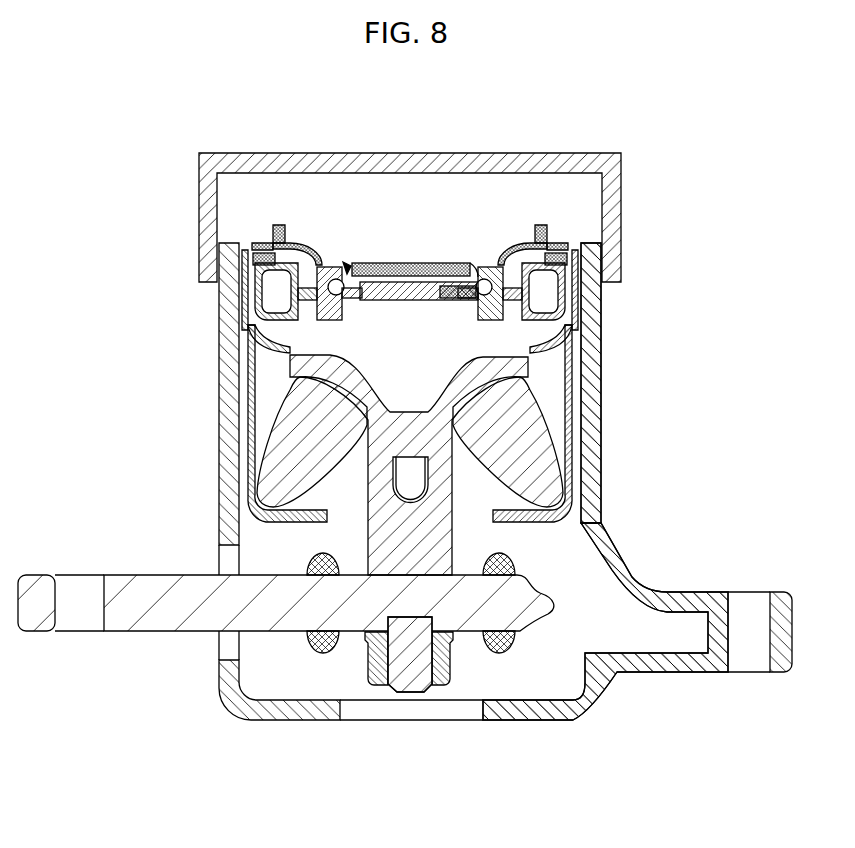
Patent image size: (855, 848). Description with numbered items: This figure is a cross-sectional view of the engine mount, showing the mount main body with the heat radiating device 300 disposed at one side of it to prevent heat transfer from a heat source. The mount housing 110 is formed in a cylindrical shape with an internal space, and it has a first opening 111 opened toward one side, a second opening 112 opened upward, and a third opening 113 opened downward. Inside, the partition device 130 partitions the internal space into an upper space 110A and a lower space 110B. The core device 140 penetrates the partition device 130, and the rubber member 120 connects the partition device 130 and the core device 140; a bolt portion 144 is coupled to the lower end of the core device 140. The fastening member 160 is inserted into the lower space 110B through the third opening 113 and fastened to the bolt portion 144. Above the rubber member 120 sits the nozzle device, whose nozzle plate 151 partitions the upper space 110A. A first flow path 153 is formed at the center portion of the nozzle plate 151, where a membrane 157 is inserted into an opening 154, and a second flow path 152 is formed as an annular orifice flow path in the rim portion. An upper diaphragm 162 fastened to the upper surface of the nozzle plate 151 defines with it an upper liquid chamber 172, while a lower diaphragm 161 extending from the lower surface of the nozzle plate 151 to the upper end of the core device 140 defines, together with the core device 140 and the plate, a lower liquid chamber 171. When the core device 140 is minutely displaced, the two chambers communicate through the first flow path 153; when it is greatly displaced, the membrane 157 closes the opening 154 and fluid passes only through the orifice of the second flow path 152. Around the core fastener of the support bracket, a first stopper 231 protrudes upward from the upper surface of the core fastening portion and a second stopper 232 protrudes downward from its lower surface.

The heat radiating device 300 is at (612, 187).
The mount housing 110 is at (625, 573).
The upper space 110A is at (468, 503).
The lower space 110B is at (575, 692).
The first opening 111 is at (231, 566).
The third opening 113 is at (377, 709).
The partition device 130 is at (602, 418).
The core device 140 is at (405, 440).
The bolt portion 144 is at (410, 652).
The fastening member 160 is at (446, 657).
The rubber member 120 is at (312, 455).
The second opening 112 is at (403, 250).
The nozzle plate 151 is at (560, 292).
The second flow path 152 is at (264, 291).
The first flow path 153 is at (347, 263).
The opening 154 is at (470, 268).
The membrane 157 is at (433, 268).
The lower diaphragm 161 is at (569, 332).
The lower liquid chamber 171 is at (375, 343).
The upper diaphragm 162 is at (512, 255).
The upper liquid chamber 172 is at (292, 253).
The first stopper 231 is at (322, 556).
The second stopper 232 is at (318, 656).